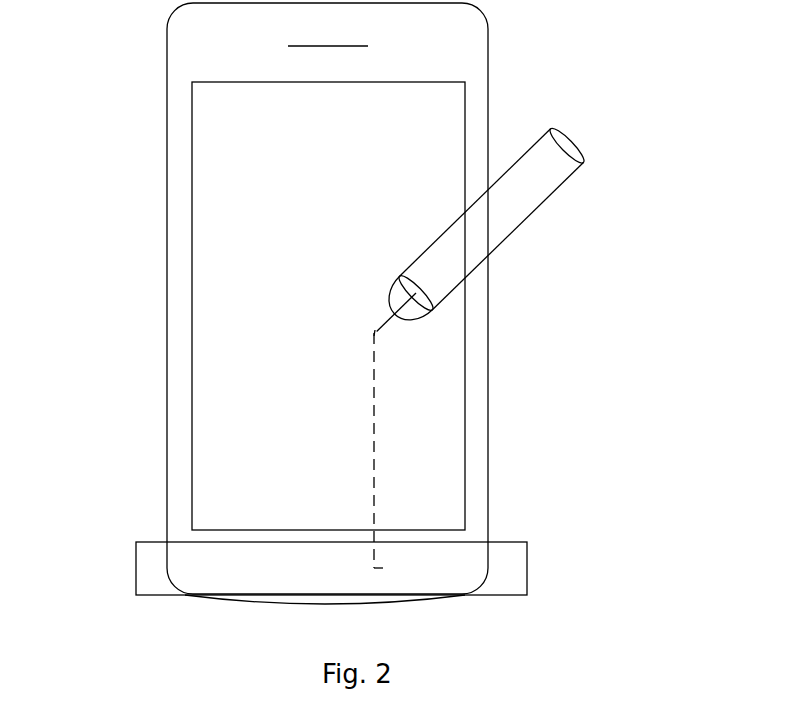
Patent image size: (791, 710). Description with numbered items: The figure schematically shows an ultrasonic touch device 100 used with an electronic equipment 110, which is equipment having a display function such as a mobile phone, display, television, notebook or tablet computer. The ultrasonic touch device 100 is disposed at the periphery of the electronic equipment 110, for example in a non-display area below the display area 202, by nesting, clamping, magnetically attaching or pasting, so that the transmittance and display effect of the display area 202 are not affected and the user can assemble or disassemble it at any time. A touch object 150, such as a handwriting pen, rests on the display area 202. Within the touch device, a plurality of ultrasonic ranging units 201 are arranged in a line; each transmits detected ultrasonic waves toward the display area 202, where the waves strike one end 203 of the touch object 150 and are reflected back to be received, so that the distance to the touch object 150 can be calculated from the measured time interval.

The ultrasonic touch device 100 is at (160, 551).
The electronic equipment 110 is at (183, 168).
The display area 202 is at (208, 262).
The touch object 150 is at (527, 192).
The one end of the touch object 203 is at (376, 331).
The ultrasonic ranging unit 201 is at (383, 568).